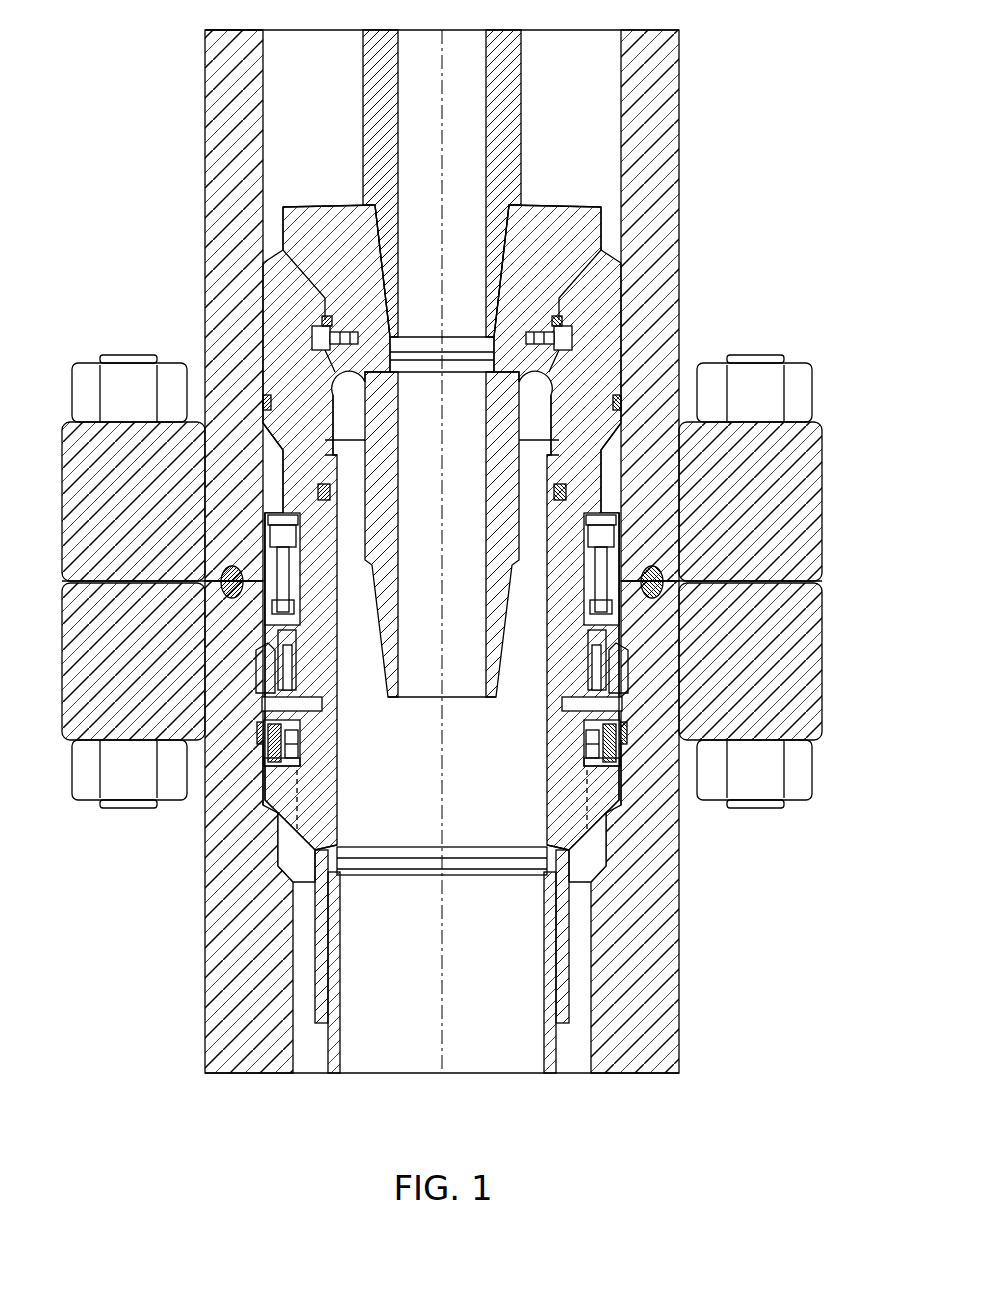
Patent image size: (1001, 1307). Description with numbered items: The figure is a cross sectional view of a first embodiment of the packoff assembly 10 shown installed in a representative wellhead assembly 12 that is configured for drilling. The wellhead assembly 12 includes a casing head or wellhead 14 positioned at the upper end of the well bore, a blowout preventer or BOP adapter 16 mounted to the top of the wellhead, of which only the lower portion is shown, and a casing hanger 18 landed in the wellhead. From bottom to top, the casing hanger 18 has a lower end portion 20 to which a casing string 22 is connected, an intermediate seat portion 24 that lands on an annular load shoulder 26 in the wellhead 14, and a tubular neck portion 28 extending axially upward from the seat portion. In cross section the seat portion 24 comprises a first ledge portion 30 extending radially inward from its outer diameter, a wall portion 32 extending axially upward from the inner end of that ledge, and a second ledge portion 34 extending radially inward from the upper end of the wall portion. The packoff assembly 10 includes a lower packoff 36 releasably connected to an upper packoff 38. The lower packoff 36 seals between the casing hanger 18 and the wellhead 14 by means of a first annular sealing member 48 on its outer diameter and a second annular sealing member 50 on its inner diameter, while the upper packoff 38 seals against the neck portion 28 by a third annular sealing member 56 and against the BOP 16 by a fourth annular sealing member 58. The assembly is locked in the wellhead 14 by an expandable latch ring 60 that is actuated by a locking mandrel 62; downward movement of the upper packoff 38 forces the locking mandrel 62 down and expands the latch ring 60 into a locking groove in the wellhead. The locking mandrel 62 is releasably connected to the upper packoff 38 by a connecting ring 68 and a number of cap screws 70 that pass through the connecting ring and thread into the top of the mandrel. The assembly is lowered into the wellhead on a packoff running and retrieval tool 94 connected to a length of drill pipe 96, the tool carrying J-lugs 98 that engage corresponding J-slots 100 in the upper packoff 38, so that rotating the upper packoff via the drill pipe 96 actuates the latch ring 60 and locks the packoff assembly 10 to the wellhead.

The packoff assembly 10 is at (614, 497).
The wellhead assembly 12 is at (120, 57).
The casing head or wellhead 14 is at (203, 975).
The blowout preventer or BOP adapter 16 is at (203, 249).
The casing hanger 18 is at (300, 848).
The lower end portion 20 is at (322, 990).
The casing string 22 is at (330, 1052).
The intermediate seat portion 24 is at (268, 795).
The annular load shoulder 26 is at (270, 800).
The tubular neck portion 28 is at (333, 530).
The first ledge portion 30 is at (264, 764).
The wall portion 32 is at (268, 740).
The second ledge portion 34 is at (268, 716).
The lower packoff 36 is at (628, 778).
The upper packoff 38 is at (630, 328).
The first annular sealing member 48 is at (623, 728).
The second annular sealing member 50 is at (588, 746).
The third annular sealing member 56 is at (603, 496).
The fourth annular sealing member 58 is at (621, 402).
The expandable latch ring 60 is at (620, 663).
The locking mandrel 62 is at (612, 631).
The connecting ring 68 is at (622, 545).
The cap screws 70 is at (612, 516).
The packoff running and retrieval tool 94 is at (600, 233).
The drill pipe 96 is at (521, 127).
The J-lugs 98 is at (315, 340).
The J-slots 100 is at (325, 326).